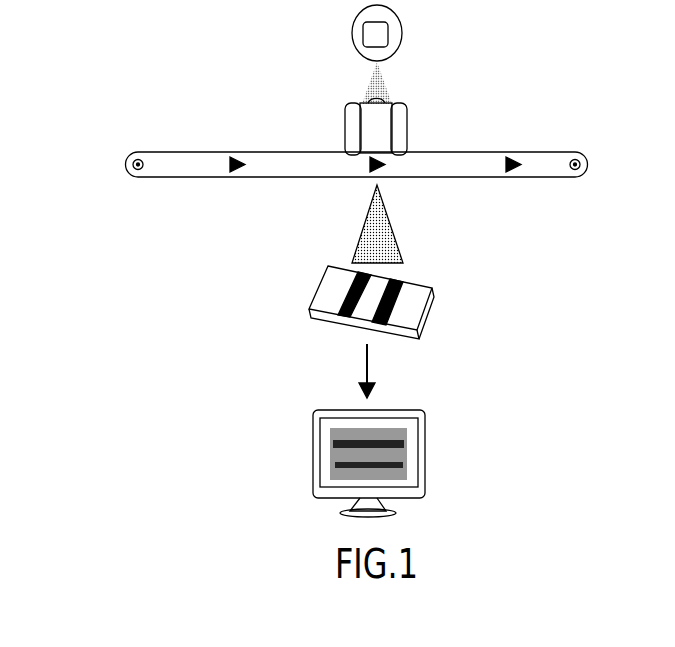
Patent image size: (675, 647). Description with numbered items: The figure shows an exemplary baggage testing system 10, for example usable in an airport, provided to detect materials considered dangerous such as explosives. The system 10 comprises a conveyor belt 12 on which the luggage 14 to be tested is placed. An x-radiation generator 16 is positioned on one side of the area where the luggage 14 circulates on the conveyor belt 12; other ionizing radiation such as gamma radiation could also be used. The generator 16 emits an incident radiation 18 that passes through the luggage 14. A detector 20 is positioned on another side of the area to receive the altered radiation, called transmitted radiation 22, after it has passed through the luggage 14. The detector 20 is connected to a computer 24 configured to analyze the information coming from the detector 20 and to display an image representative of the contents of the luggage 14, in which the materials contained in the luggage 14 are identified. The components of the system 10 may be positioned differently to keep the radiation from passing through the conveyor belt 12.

The baggage testing system 10 is at (92, 116).
The conveyor belt 12 is at (541, 152).
The luggage 14 is at (400, 130).
The x-radiation generator 16 is at (402, 35).
The incident radiation 18 is at (385, 86).
The detector 20 is at (432, 313).
The transmitted radiation 22 is at (393, 237).
The computer 24 is at (425, 460).